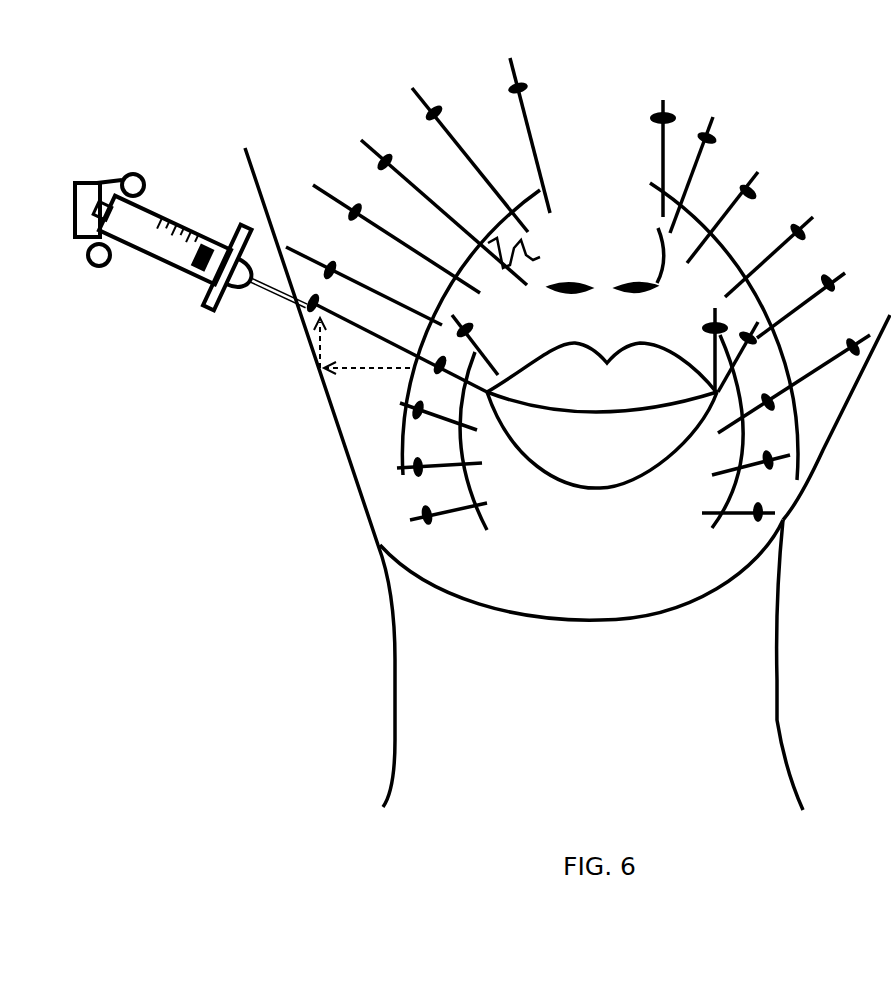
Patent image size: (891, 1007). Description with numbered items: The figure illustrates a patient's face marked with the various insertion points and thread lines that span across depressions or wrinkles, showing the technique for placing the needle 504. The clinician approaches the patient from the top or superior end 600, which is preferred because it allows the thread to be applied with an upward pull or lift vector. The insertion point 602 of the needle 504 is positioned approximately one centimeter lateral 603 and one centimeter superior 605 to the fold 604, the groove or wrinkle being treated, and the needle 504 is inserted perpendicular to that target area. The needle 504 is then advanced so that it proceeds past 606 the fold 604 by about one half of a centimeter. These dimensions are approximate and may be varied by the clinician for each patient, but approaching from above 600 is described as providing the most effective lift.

The superior end of the patient 600 is at (774, 73).
The needle 504 is at (153, 257).
The insertion point 602 is at (317, 350).
The superior offset 605 is at (318, 353).
The lateral offset 603 is at (360, 368).
The fold 604 is at (403, 437).
The point past the fold 606 is at (540, 257).